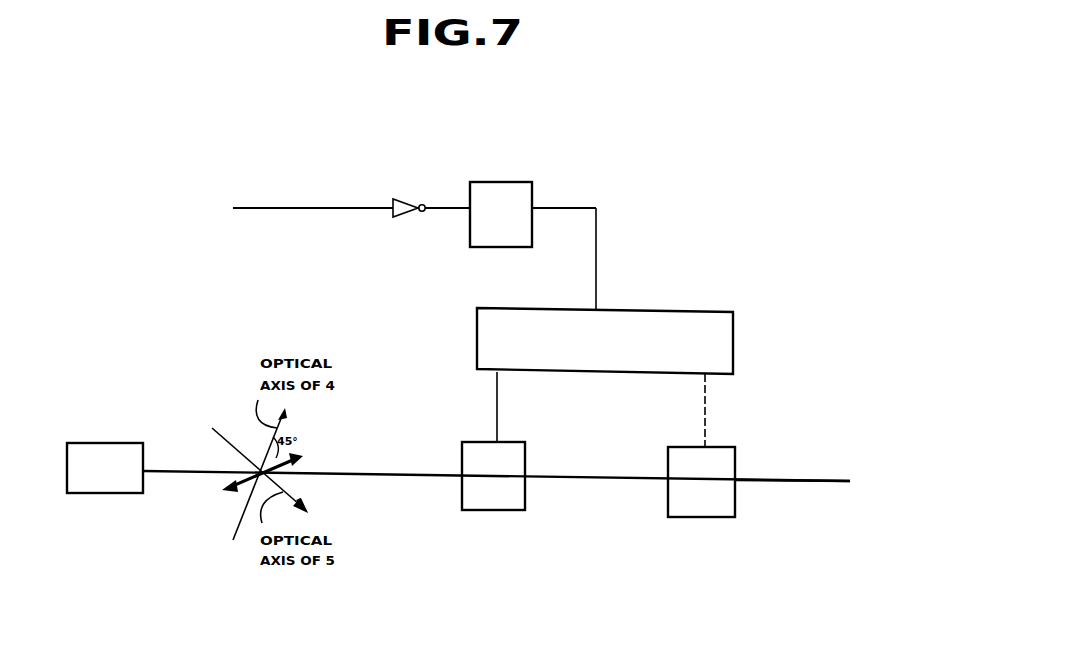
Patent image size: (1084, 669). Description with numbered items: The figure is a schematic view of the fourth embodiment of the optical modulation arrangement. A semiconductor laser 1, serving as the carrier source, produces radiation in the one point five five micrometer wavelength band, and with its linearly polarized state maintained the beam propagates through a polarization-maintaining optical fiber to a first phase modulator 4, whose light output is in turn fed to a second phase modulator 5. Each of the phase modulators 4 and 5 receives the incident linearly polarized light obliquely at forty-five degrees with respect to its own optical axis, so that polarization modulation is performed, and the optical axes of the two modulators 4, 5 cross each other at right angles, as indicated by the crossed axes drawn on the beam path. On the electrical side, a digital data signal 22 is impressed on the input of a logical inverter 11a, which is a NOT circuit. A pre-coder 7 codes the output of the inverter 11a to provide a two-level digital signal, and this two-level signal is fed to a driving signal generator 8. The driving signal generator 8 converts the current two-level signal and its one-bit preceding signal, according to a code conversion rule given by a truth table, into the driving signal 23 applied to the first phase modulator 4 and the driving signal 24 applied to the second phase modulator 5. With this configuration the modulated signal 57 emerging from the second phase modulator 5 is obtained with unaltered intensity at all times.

The semiconductor laser 1 is at (93, 483).
The first phase modulator 4 is at (492, 500).
The second phase modulator 5 is at (687, 507).
The pre-coder 7 is at (481, 191).
The driving signal generator 8 is at (662, 320).
The logical inverter 11a is at (342, 249).
The digital data signal 22 is at (322, 199).
The driving signal Op 23 is at (509, 388).
The driving signal Os 24 is at (723, 388).
The modulated signal 57 is at (836, 469).